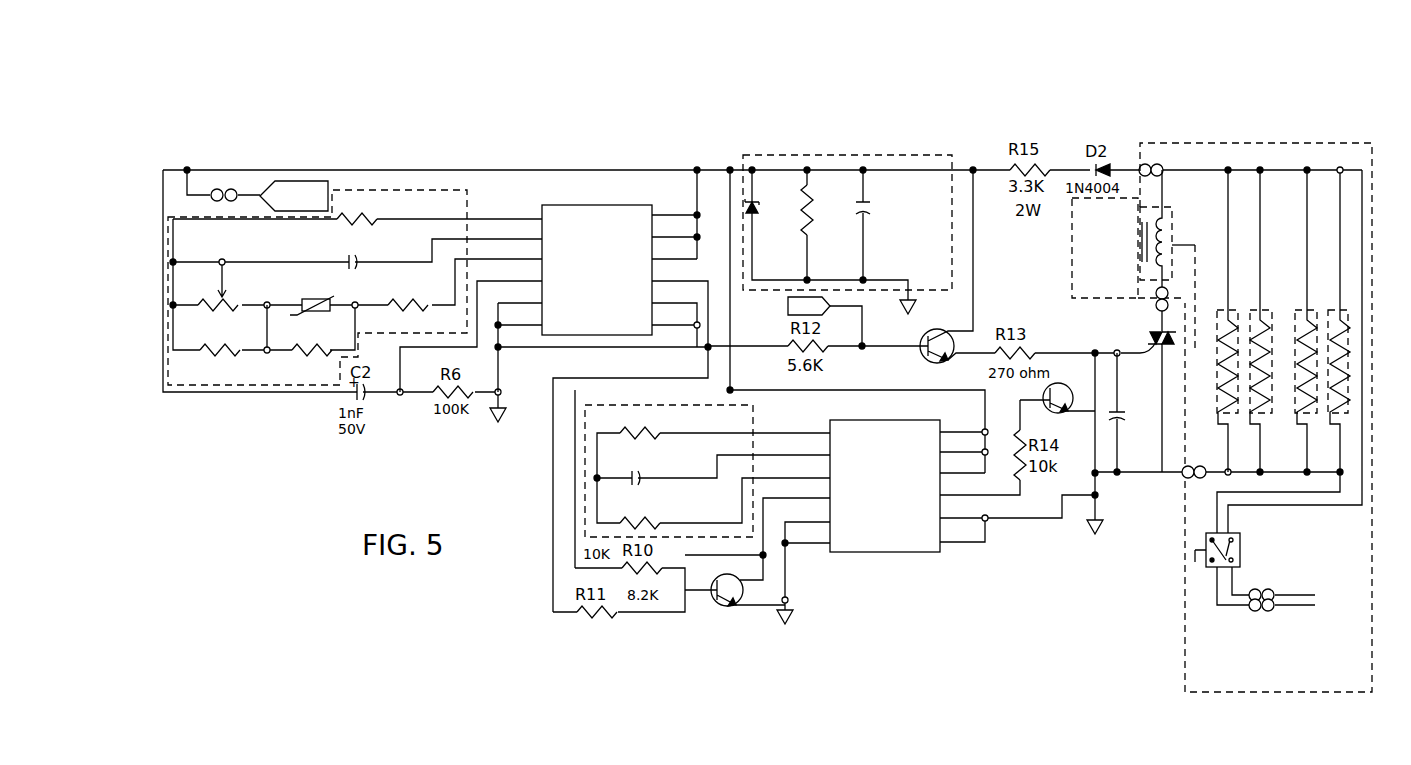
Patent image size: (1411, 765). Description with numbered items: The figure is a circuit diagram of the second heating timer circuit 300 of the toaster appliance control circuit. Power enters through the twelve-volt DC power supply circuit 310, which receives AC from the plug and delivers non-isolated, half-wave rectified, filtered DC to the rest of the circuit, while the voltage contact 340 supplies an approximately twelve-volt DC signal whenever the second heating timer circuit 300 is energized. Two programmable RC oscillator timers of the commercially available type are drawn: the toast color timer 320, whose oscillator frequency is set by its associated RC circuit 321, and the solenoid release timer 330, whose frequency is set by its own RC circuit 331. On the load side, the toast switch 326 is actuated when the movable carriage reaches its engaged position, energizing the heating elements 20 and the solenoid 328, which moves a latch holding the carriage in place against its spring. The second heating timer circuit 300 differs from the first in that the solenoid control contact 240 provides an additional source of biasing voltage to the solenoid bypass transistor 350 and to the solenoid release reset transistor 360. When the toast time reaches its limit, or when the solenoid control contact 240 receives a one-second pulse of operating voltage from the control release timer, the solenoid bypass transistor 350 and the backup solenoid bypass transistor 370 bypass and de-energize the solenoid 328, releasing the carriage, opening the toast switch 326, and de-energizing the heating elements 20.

The heating elements 20 is at (1350, 283).
The solenoid control contact 240 is at (788, 300).
The second heating timer circuit 300 is at (1127, 112).
The 12V DC power supply circuit 310 is at (832, 148).
The toast color timer 320 is at (603, 190).
The RC circuit 321 is at (246, 394).
The toast switch 326 is at (1298, 565).
The solenoid 328 is at (1140, 230).
The solenoid release timer 330 is at (947, 556).
The RC circuit 331 is at (582, 485).
The voltage contact 340 is at (292, 182).
The solenoid bypass transistor 350 is at (950, 318).
The solenoid release reset transistor 360 is at (745, 584).
The backup solenoid bypass transistor 370 is at (1063, 383).